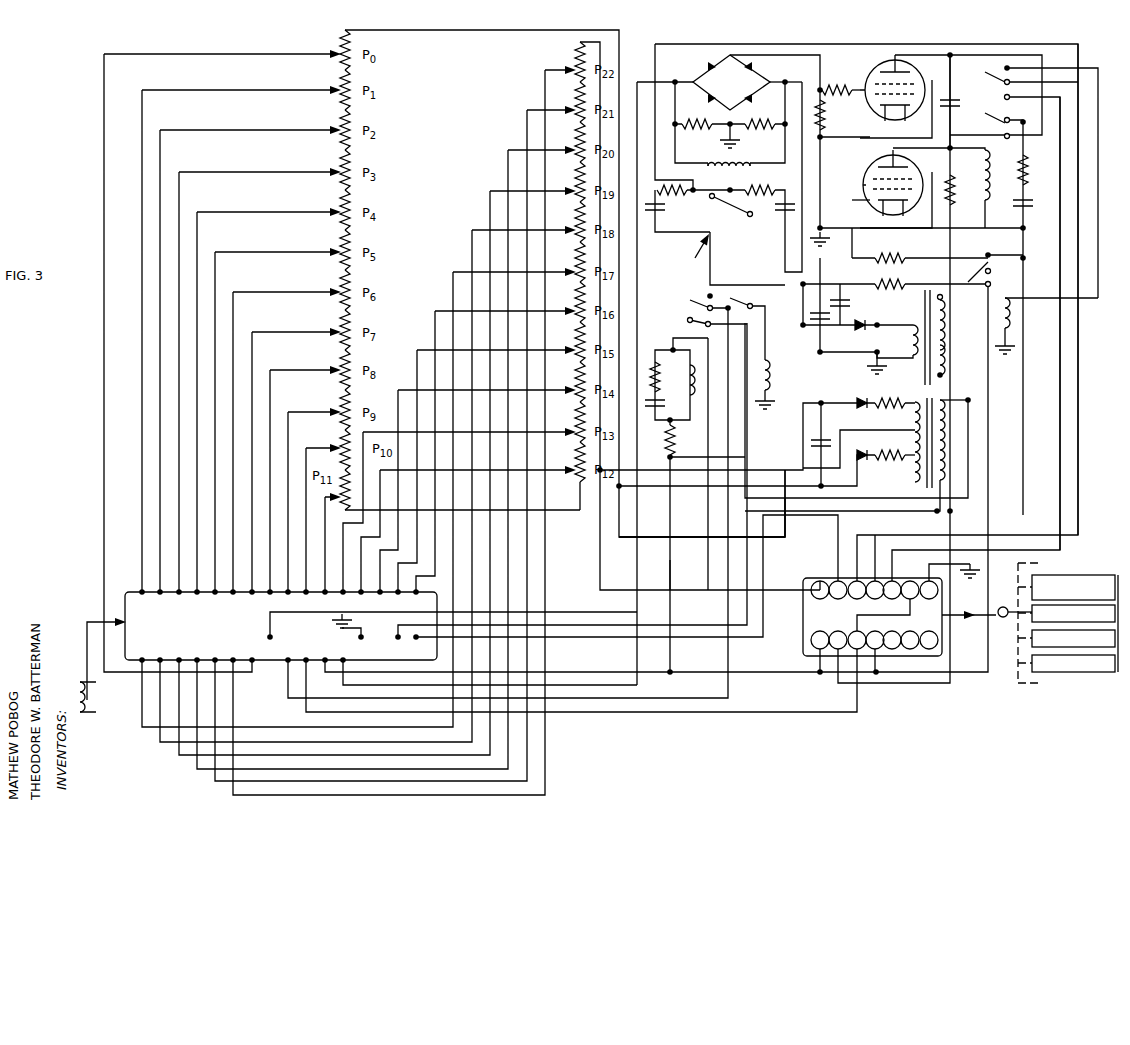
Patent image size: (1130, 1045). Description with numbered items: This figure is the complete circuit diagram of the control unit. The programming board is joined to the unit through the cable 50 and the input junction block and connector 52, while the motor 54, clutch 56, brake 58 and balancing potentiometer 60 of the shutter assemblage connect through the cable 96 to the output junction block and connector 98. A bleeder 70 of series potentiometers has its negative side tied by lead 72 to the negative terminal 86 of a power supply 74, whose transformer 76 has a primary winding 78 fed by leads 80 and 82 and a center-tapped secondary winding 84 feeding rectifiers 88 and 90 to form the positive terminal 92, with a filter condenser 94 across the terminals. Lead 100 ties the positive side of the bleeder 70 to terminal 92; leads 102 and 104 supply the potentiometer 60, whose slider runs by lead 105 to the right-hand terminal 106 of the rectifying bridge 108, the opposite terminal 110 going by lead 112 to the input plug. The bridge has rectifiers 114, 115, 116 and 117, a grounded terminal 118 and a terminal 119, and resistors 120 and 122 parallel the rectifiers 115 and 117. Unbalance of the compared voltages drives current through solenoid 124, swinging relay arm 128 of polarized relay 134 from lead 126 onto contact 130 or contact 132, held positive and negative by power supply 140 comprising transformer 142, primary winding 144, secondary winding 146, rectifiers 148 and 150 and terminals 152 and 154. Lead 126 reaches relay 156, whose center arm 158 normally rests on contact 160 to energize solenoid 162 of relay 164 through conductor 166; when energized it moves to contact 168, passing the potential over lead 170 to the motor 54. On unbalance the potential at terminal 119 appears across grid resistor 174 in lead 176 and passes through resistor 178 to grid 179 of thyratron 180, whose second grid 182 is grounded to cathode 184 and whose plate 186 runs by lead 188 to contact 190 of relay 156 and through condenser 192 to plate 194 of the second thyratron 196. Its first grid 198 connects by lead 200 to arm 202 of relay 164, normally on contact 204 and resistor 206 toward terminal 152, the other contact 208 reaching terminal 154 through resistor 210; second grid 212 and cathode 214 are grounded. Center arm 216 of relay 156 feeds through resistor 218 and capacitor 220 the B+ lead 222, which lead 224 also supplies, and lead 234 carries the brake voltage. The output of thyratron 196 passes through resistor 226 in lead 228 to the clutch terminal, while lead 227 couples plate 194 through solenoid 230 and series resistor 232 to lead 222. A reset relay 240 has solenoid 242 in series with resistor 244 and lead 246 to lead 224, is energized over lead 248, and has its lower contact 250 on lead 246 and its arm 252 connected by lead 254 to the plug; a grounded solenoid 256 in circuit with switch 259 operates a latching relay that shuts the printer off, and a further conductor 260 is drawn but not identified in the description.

The cable 50 is at (103, 671).
The input junction block and connector 52 is at (281, 626).
The motor 54 is at (1078, 674).
The clutch 56 is at (1074, 602).
The brake 58 is at (1074, 672).
The balancing potentiometer 60 is at (1062, 577).
The bleeder 70 is at (629, 316).
The lead 72 is at (584, 500).
The power supply 74 is at (954, 392).
The transformer 76 is at (968, 404).
The primary winding 78 is at (950, 428).
The lead 80 is at (968, 458).
The lead 82 is at (950, 484).
The secondary winding 84 is at (904, 418).
The negative terminal 86 is at (825, 486).
The rectifier 88 is at (886, 394).
The rectifier 90 is at (886, 468).
The positive terminal 92 is at (843, 381).
The filter condenser 94 is at (820, 446).
The cable 96 is at (1012, 624).
The output junction block and connector 98 is at (940, 363).
The lead 100 is at (640, 245).
The lead 102 is at (688, 537).
The lead 104 is at (627, 567).
The lead 105 is at (830, 305).
The right hand terminal 106 is at (787, 70).
The balancing rectifying bridge 108 is at (731, 82).
The opposite terminal 110 is at (665, 70).
The lead 112 is at (618, 598).
The rectifier 114 is at (712, 60).
The rectifier 115 is at (708, 94).
The rectifier 116 is at (752, 62).
The rectifier 117 is at (754, 94).
The terminal 118 is at (770, 68).
The terminal 119 is at (748, 58).
The resistor 120 is at (708, 122).
The resistor 122 is at (766, 122).
The solenoid 124 is at (772, 172).
The lead 126 is at (652, 48).
The relay arm 128 is at (747, 258).
The contact 130 is at (705, 201).
The contact 132 is at (773, 177).
The polarized relay 134 is at (692, 252).
The power supply 140 is at (883, 310).
The transformer 142 is at (927, 393).
The primary winding 144 is at (944, 334).
The secondary winding 146 is at (897, 357).
The rectifier 148 is at (852, 304).
The rectifier 150 is at (866, 332).
The negative terminal 152 is at (894, 274).
The positive terminal 154 is at (862, 363).
The relay 156 is at (1107, 81).
The center arm 158 is at (1010, 78).
The contact 160 is at (1006, 66).
The solenoid 162 is at (1010, 310).
The relay 164 is at (990, 248).
The conductor 166 is at (1098, 316).
The contact 168 is at (1024, 302).
The lead 170 is at (1078, 405).
The grid resistor 174 is at (835, 115).
The lead 176 is at (840, 68).
The resistor 178 is at (841, 77).
The grid 179 is at (842, 99).
The thyratron 180 is at (895, 52).
The second grid 182 is at (918, 78).
The cathode 184 is at (845, 135).
The plate 186 is at (904, 60).
The lead 188 is at (1047, 68).
The contact 190 is at (994, 314).
The condenser 192 is at (957, 56).
The plate 194 is at (860, 160).
The thyratron 196 is at (906, 184).
The first grid 198 is at (850, 178).
The lead 200 is at (916, 236).
The arm 202 is at (1012, 262).
The contact 204 is at (1010, 250).
The resistor 206 is at (920, 249).
The contact 208 is at (1012, 283).
The resistor 210 is at (972, 263).
The second grid 212 is at (909, 157).
The cathode 214 is at (850, 199).
The center arm 216 is at (1024, 111).
The resistor 218 is at (1037, 163).
The capacitor 220 is at (1035, 204).
The lead 222 is at (1026, 376).
The lead 224 is at (578, 676).
The resistor 226 is at (927, 247).
The lead 227 is at (1007, 150).
The lead 228 is at (972, 355).
The solenoid 230 is at (970, 188).
The series resistor 232 is at (962, 195).
The lead 234 is at (1060, 348).
The relay 240 is at (664, 346).
The solenoid 242 is at (672, 378).
The resistor 244 is at (705, 544).
The lead 246 is at (672, 554).
The lead 248 is at (708, 620).
The lower contact 250 is at (688, 318).
The arm 252 is at (684, 298).
The lead 254 is at (731, 684).
The solenoid 256 is at (768, 382).
The switch 259 is at (750, 322).
The lead 260 is at (674, 708).